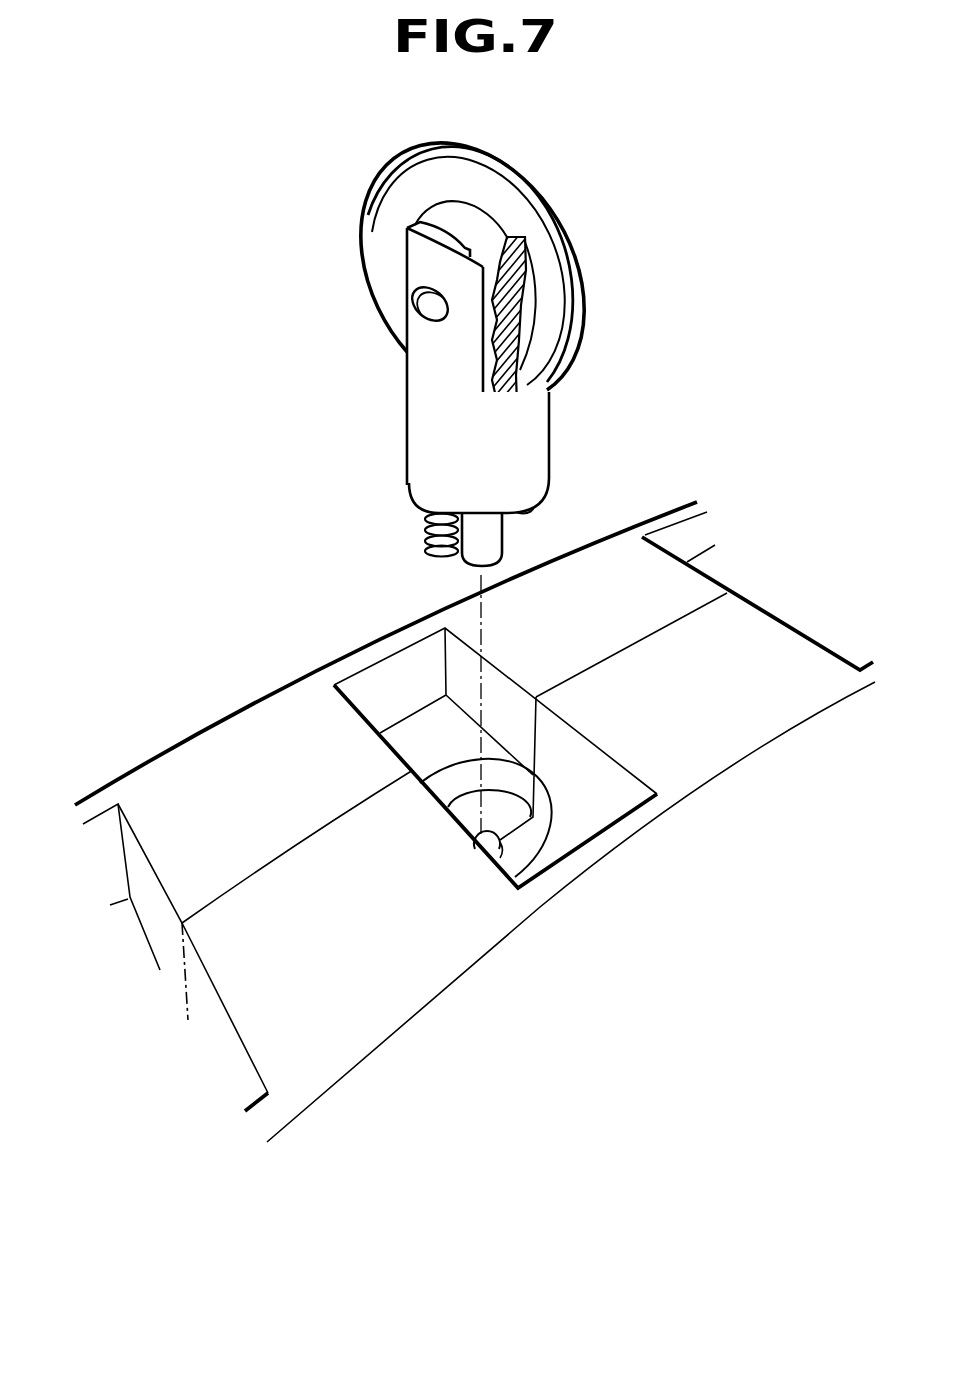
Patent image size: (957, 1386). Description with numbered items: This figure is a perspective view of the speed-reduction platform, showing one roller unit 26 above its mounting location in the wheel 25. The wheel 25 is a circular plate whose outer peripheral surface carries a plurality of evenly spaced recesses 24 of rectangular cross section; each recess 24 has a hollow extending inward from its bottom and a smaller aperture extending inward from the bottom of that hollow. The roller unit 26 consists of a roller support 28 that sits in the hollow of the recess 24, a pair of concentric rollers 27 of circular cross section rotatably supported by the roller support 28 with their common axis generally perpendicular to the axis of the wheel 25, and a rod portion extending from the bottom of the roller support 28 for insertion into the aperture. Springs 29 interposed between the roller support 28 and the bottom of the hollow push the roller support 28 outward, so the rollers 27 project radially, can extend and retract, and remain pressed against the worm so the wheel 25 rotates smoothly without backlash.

The recess 24 is at (530, 852).
The wheel 25 is at (795, 647).
The roller unit 26 is at (553, 423).
The rollers 27 is at (553, 215).
The roller support 28 is at (419, 464).
The springs 29 is at (533, 509).